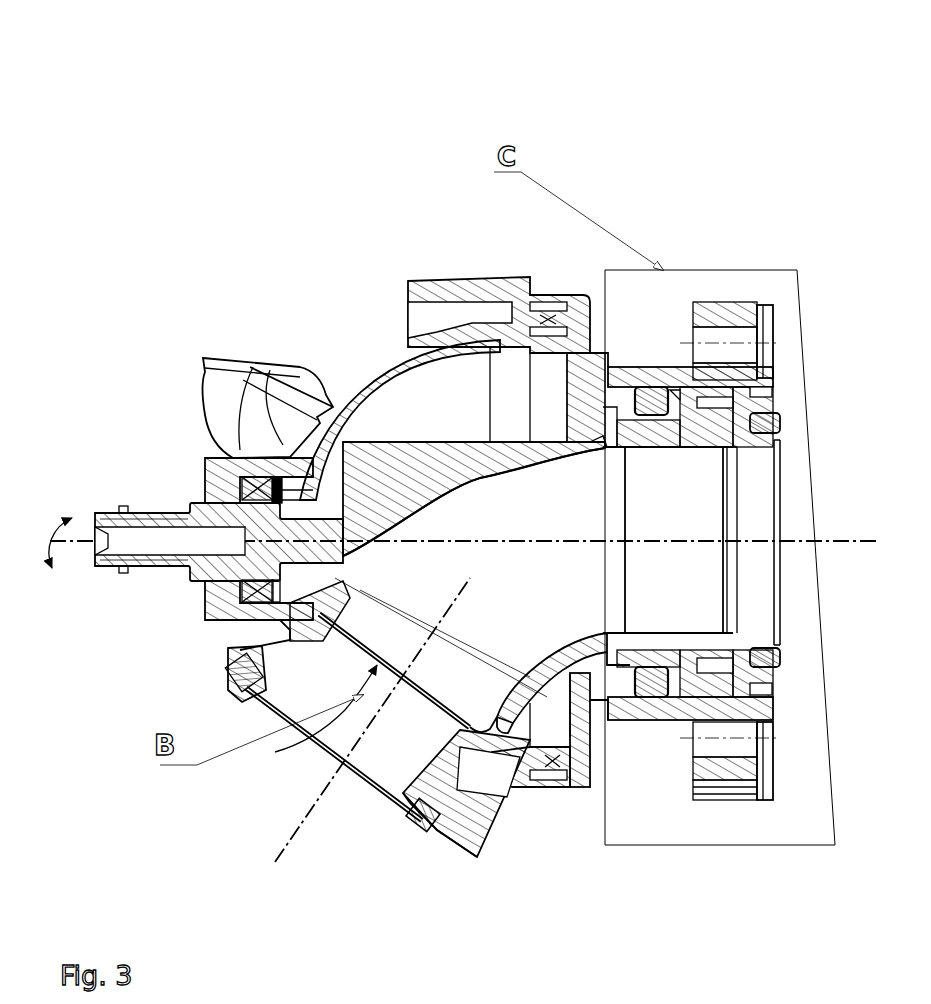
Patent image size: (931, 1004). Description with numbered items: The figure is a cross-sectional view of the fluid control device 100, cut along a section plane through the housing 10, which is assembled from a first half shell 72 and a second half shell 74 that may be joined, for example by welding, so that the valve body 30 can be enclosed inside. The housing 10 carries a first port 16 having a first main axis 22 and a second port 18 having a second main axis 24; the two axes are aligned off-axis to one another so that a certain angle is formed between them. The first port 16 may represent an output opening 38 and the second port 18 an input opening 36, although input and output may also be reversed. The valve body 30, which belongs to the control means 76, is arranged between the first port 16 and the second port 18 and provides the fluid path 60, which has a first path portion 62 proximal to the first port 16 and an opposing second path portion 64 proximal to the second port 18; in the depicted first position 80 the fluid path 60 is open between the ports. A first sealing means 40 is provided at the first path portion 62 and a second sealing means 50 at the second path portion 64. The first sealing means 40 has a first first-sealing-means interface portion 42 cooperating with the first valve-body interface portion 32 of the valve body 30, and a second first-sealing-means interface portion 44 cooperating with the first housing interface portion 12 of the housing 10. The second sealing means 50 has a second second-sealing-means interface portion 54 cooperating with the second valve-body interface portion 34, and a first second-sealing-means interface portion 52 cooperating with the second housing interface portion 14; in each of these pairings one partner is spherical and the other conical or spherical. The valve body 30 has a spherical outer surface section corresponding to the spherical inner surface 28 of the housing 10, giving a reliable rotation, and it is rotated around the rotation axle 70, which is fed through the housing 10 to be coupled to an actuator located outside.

The housing 10 is at (488, 283).
The first housing interface portion 12 is at (688, 410).
The second housing interface portion 14 is at (232, 627).
The first port 16 is at (746, 570).
The second port 18 is at (308, 719).
The first main axis 22 is at (535, 545).
The second main axis 24 is at (293, 838).
The inner surface 28 is at (375, 380).
The valve body 30 is at (466, 442).
The first valve-body interface portion 32 is at (606, 445).
The second valve-body interface portion 34 is at (405, 546).
The input opening 36 is at (400, 794).
The output opening 38 is at (745, 468).
The first sealing means 40 is at (652, 425).
The first first-sealing-means interface portion 42 is at (626, 415).
The second first-sealing-means interface portion 44 is at (677, 395).
The second sealing means 50 is at (377, 797).
The first second-sealing-means interface portion 52 is at (330, 612).
The second second-sealing-means interface portion 54 is at (332, 578).
The fluid path 60 is at (530, 504).
The first path portion 62 is at (697, 588).
The second path portion 64 is at (508, 640).
The rotation axle 70 is at (106, 512).
The first half shell 72 is at (445, 322).
The second half shell 74 is at (578, 296).
The control means 76 is at (430, 440).
The first position 80 is at (224, 256).
The fluid control device 100 is at (649, 137).